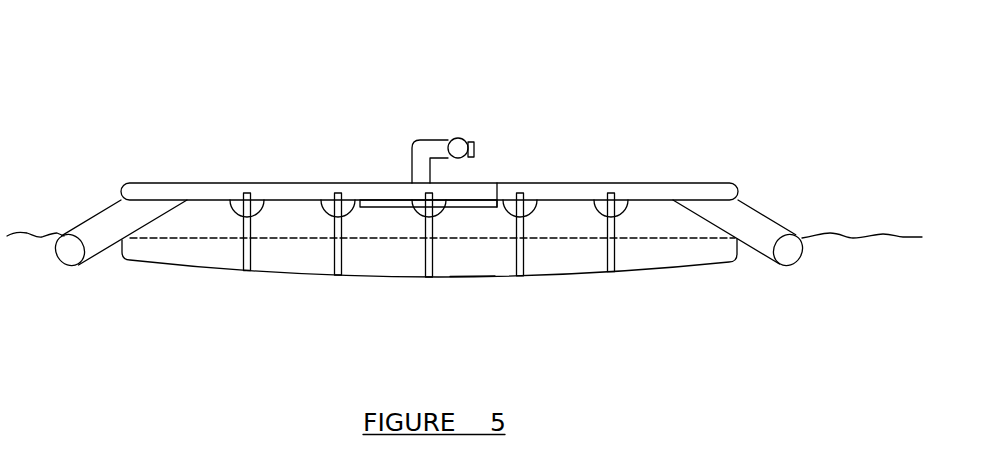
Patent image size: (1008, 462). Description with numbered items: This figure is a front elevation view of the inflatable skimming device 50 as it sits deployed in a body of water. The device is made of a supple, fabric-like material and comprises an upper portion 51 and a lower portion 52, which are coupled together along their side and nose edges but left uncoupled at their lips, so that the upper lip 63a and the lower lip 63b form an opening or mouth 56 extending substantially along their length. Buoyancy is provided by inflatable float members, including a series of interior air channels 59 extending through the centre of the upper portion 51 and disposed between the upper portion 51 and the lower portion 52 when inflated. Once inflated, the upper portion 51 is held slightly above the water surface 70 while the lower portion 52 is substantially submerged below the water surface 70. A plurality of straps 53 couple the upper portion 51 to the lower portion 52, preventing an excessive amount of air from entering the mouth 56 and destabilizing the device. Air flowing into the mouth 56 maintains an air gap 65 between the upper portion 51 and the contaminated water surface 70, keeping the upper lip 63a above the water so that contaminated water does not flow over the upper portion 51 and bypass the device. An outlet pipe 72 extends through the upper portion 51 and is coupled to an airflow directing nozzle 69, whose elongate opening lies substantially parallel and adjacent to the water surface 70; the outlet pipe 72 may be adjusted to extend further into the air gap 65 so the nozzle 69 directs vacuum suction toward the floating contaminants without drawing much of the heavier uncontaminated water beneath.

The skimming device 50 is at (782, 101).
The upper portion 51 is at (705, 183).
The lower portion 52 is at (677, 267).
The straps 53 is at (246, 270).
The mouth 56 is at (184, 244).
The interior air channels 59 is at (258, 207).
The upper lip 63a is at (497, 183).
The lower lip 63b is at (472, 277).
The air gap 65 is at (681, 223).
The airflow directing nozzle 69 is at (383, 207).
The water surface 70 is at (876, 236).
The outlet pipe 72 is at (418, 140).